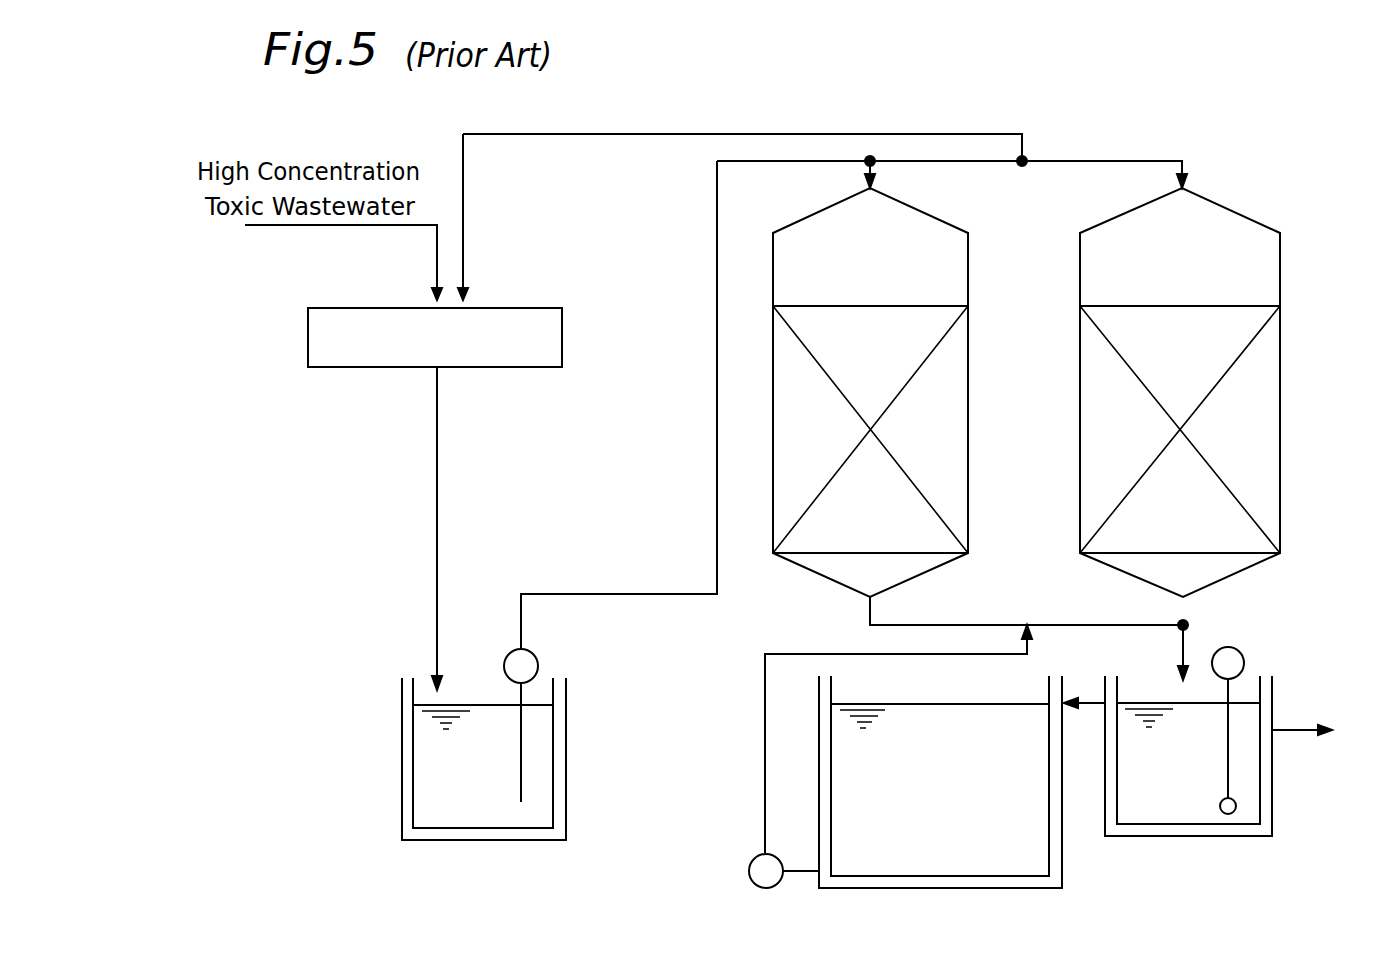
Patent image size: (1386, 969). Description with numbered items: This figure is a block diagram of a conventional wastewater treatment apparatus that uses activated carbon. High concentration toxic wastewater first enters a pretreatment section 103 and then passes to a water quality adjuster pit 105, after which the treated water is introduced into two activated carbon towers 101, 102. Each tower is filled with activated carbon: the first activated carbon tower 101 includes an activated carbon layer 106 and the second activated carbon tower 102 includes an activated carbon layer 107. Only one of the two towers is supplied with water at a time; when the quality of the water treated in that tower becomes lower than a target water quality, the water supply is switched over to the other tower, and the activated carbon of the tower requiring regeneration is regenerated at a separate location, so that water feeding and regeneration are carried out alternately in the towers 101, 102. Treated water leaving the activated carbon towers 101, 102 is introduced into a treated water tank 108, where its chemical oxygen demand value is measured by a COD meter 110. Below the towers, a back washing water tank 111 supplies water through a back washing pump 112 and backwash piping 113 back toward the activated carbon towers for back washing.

The activated carbon tower 101 is at (889, 397).
The activated carbon tower 102 is at (1185, 392).
The pretreatment section 103 is at (562, 337).
The water quality adjuster pit 105 is at (402, 763).
The activated carbon layer 106 is at (953, 410).
The activated carbon layer 107 is at (1265, 428).
The treated water tank 108 is at (1272, 695).
The COD meter 110 is at (1240, 650).
The back washing water tank 111 is at (1062, 870).
The back washing pump 112 is at (752, 860).
The backwash piping 113 is at (765, 695).